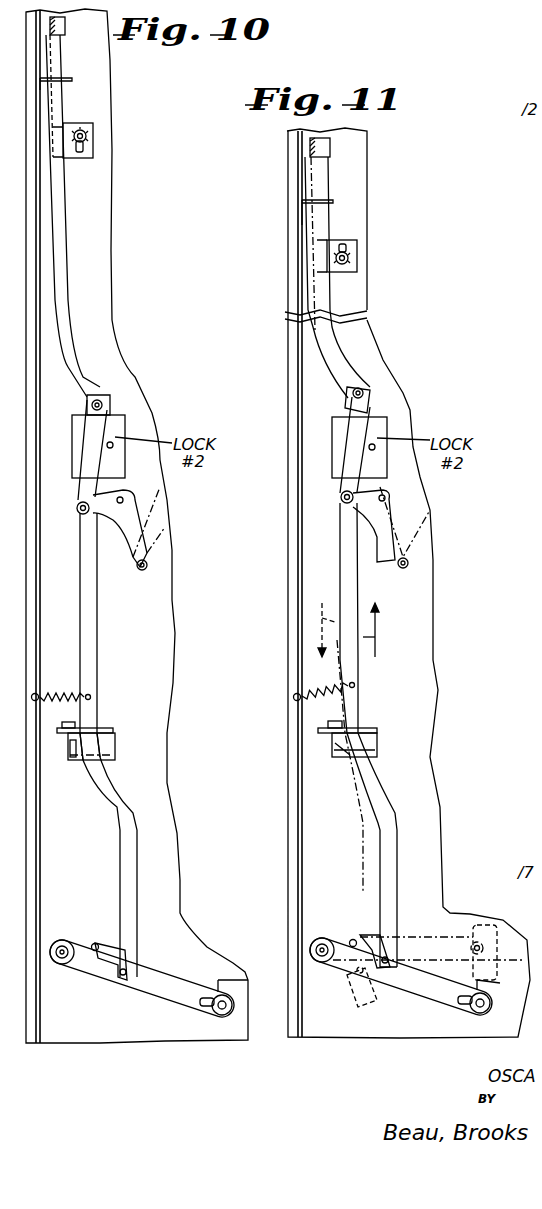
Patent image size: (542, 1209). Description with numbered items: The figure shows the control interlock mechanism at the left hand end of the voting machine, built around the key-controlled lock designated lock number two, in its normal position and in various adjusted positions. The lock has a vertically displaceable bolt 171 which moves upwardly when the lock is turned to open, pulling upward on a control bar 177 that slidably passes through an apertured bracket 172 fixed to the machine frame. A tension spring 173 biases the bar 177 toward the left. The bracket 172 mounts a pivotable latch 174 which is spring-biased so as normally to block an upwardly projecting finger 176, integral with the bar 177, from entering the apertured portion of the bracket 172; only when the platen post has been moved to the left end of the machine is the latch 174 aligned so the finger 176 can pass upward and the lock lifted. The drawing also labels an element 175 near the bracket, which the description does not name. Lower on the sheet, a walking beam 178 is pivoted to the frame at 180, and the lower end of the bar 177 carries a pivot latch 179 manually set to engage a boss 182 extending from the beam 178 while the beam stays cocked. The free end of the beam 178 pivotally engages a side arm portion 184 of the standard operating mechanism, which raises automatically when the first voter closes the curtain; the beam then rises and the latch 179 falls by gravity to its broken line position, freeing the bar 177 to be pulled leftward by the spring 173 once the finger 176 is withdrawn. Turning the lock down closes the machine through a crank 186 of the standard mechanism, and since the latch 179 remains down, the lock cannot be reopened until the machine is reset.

In FIG. 10, the bolt 171 is at (110, 408).
In FIG. 11, the bolt 171 is at (372, 405).
In FIG. 10, the apertured bracket 172 is at (115, 742).
In FIG. 11, the apertured bracket 172 is at (377, 740).
In FIG. 10, the tension spring 173 is at (60, 694).
In FIG. 11, the tension spring 173 is at (298, 693).
In FIG. 10, the pivotable latch 174 is at (83, 727).
In FIG. 10, the rod portion 175 is at (82, 760).
In FIG. 10, the finger 176 is at (73, 747).
In FIG. 10, the control bar 177 is at (120, 860).
In FIG. 10, the walking beam 178 is at (167, 983).
In FIG. 11, the walking beam 178 is at (433, 993).
In FIG. 10, the pivot latch 179 is at (105, 960).
In FIG. 11, the pivot latch 179 is at (365, 933).
In FIG. 10, the pivot 180 is at (65, 944).
In FIG. 10, the boss 182 is at (95, 945).
In FIG. 11, the boss 182 is at (352, 937).
In FIG. 10, the side arm portion 184 is at (233, 980).
In FIG. 10, the crank 186 is at (132, 530).